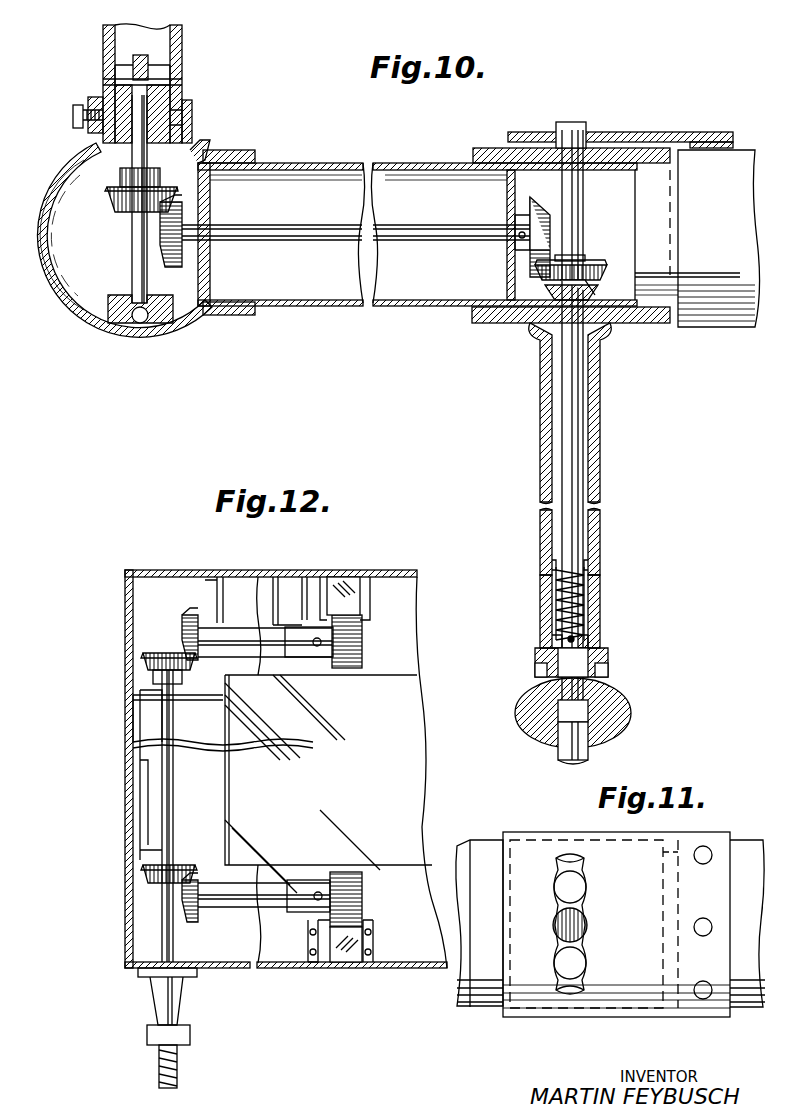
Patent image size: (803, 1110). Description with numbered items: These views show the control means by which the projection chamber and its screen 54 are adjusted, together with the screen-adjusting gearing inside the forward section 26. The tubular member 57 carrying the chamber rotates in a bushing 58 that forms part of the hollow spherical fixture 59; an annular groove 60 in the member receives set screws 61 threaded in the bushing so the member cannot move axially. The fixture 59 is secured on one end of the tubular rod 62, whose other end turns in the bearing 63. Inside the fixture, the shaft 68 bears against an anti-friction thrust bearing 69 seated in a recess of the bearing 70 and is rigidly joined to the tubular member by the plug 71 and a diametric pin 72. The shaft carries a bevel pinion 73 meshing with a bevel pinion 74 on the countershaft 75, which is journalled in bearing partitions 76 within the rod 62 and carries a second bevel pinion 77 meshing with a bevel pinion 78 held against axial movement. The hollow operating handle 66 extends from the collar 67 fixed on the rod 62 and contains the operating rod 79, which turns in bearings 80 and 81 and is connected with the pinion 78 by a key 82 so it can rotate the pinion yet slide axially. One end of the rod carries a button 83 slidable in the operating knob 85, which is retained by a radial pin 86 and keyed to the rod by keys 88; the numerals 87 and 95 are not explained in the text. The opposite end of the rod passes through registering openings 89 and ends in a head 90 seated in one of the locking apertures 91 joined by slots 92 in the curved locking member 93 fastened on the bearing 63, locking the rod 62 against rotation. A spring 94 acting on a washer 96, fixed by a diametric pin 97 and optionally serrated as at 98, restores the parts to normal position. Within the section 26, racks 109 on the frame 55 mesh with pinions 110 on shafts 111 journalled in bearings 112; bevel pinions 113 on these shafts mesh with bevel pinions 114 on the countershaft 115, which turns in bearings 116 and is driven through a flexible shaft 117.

In FIG. 12, the forward section of the projection chamber 26 is at (125, 616).
In FIG. 12, the screen 54 is at (282, 735).
In FIG. 12, the frame 55 is at (392, 670).
In FIG. 10, the tubular member 57 is at (182, 38).
In FIG. 10, the bushing 58 is at (92, 97).
In FIG. 10, the hollow spherical fixture 59 is at (65, 300).
In FIG. 10, the annular groove 60 is at (192, 118).
In FIG. 10, the set screws 61 is at (73, 116).
In FIG. 10, the tubular rod 62 is at (305, 306).
In FIG. 11, the tubular rod 62 is at (462, 1000).
In FIG. 10, the bearing 63 is at (722, 327).
In FIG. 11, the bearing 63 is at (743, 840).
In FIG. 10, the operating handle 66 is at (600, 535).
In FIG. 10, the collar 67 is at (475, 320).
In FIG. 11, the collar 67 is at (485, 840).
In FIG. 10, the shaft 68 is at (132, 258).
In FIG. 10, the anti-friction thrust bearing 69 is at (138, 323).
In FIG. 10, the bearing 70 is at (100, 325).
In FIG. 10, the plug 71 is at (133, 62).
In FIG. 10, the pin 72 is at (182, 81).
In FIG. 10, the bevel pinion 73 is at (112, 208).
In FIG. 10, the bevel pinion 74 is at (166, 262).
In FIG. 10, the countershaft 75 is at (275, 242).
In FIG. 10, the bearing partitions 76 is at (212, 205).
In FIG. 10, the second bevel pinion 77 is at (530, 250).
In FIG. 10, the bevel pinion 78 is at (605, 270).
In FIG. 10, the operating rod 79 is at (583, 197).
In FIG. 10, the bearing 80 is at (545, 292).
In FIG. 10, the bearing 81 is at (608, 655).
In FIG. 10, the key 82 is at (583, 260).
In FIG. 10, the button 83 is at (566, 760).
In FIG. 10, the operating knob 85 is at (535, 735).
In FIG. 10, the radial pin 86 is at (535, 672).
In FIG. 10, the pin 87 is at (608, 670).
In FIG. 10, the keys 88 is at (516, 710).
In FIG. 10, the registering openings 89 is at (590, 148).
In FIG. 10, the head 90 is at (585, 122).
In FIG. 11, the head 90 is at (580, 918).
In FIG. 11, the locking apertures 91 is at (584, 945).
In FIG. 11, the slots 92 is at (557, 940).
In FIG. 10, the curved locking member 93 is at (530, 132).
In FIG. 11, the curved locking member 93 is at (518, 985).
In FIG. 10, the spring 94 is at (586, 600).
In FIG. 10, the spring seat 95 is at (588, 565).
In FIG. 10, the washer 96 is at (596, 640).
In FIG. 10, the diametric pin 97 is at (552, 640).
In FIG. 10, the teeth or serrations 98 is at (550, 648).
In FIG. 12, the racks 109 is at (363, 600).
In FIG. 12, the pinions 110 is at (362, 638).
In FIG. 12, the shafts 111 is at (250, 660).
In FIG. 12, the bearings 112 is at (255, 618).
In FIG. 12, the bevel pinions 113 is at (186, 615).
In FIG. 12, the bevel pinions 114 is at (160, 652).
In FIG. 12, the countershaft 115 is at (173, 822).
In FIG. 12, the bearings 116 is at (175, 700).
In FIG. 12, the flexible shaft 117 is at (177, 1068).